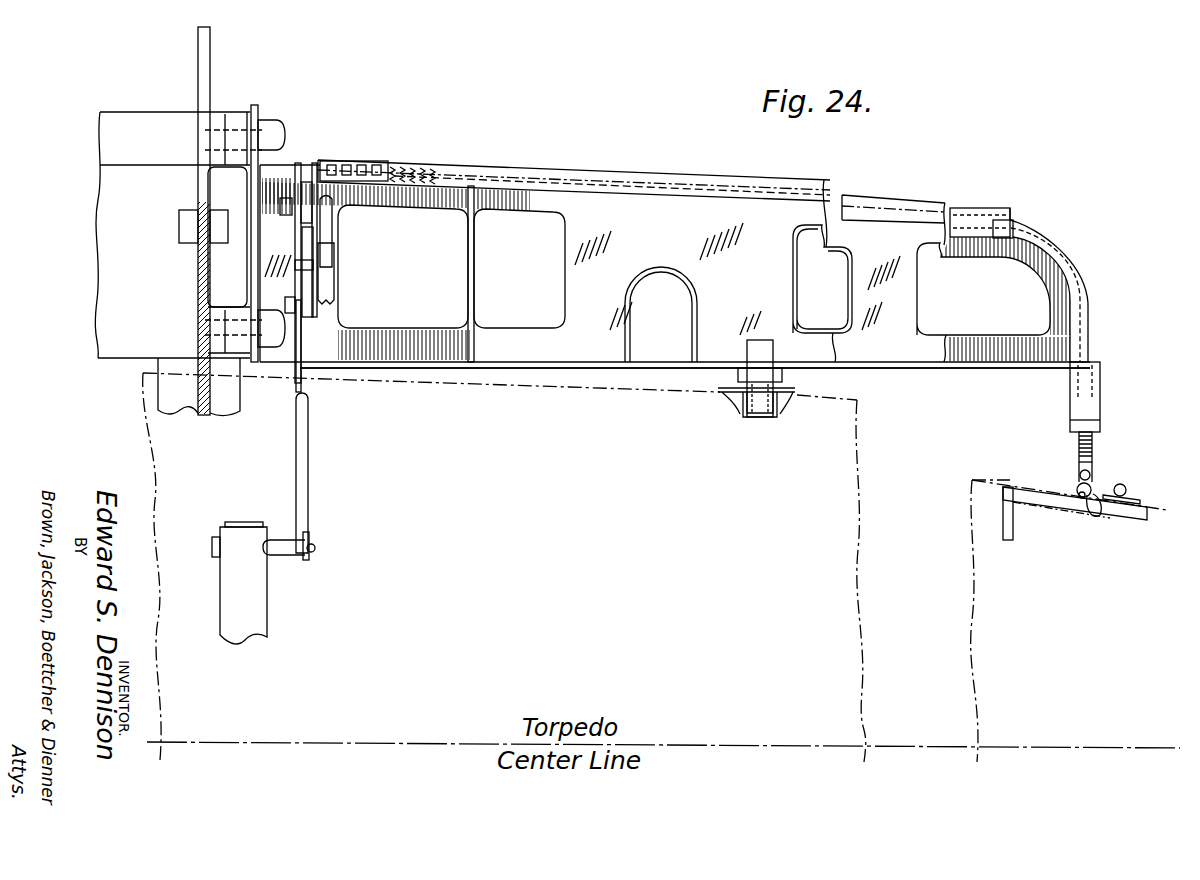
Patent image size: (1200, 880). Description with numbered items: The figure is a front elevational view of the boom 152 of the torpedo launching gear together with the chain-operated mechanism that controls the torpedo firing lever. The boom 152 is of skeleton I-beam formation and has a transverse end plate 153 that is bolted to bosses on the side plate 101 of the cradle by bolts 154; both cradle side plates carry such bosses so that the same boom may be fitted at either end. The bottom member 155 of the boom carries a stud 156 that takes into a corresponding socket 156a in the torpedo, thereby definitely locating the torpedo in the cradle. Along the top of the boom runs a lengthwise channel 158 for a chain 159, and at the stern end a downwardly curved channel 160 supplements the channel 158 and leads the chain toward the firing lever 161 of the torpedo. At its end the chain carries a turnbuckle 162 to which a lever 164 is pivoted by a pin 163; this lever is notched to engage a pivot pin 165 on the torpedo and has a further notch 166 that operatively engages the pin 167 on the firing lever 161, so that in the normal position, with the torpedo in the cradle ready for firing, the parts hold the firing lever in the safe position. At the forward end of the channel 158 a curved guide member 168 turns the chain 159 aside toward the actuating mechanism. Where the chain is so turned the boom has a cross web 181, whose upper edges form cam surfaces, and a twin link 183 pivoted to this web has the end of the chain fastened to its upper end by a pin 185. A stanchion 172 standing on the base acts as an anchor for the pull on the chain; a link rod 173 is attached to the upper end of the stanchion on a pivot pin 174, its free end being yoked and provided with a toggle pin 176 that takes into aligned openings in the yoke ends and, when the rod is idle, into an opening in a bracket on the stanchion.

The side plate 101 is at (207, 46).
The boom 152 is at (670, 216).
The transverse end plate 153 is at (257, 105).
The bolts 154 is at (277, 128).
The bottom member 155 is at (583, 368).
The stud 156 is at (755, 400).
The socket 156a is at (748, 417).
The lengthwise channel 158 is at (513, 162).
The chain 159 is at (440, 162).
The downwardly curved channel 160 is at (1082, 262).
The firing lever 161 is at (1022, 493).
The turnbuckle 162 is at (1081, 415).
The pin 163 is at (1090, 472).
The lever 164 is at (1091, 488).
The pivot pin 165 is at (1127, 490).
The notch 166 is at (1093, 518).
The pin 167 is at (1081, 500).
The curved guide member 168 is at (345, 161).
The stanchion 172 is at (248, 608).
The link rod 173 is at (308, 458).
The pivot pin 174 is at (315, 548).
The toggle pin 176 is at (332, 208).
The cross web 181 is at (305, 330).
The twin link 183 is at (322, 283).
The pin 185 is at (298, 165).